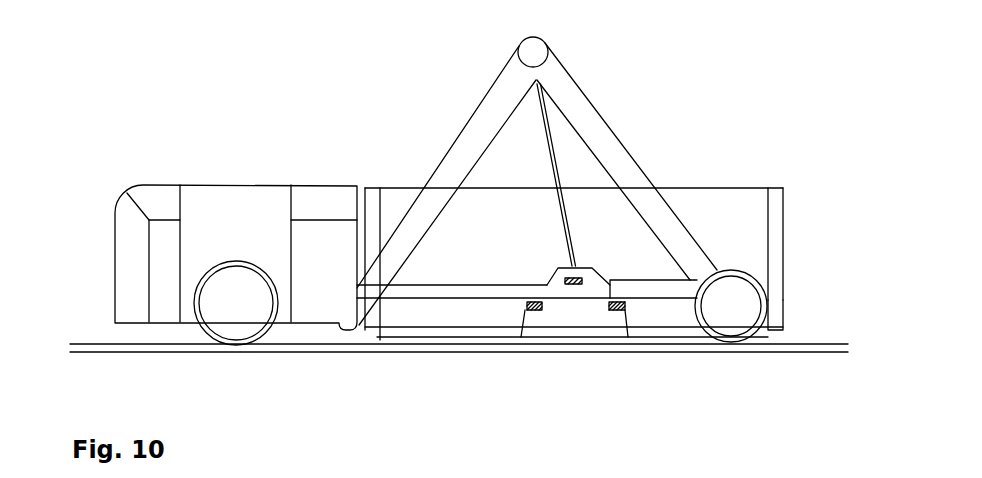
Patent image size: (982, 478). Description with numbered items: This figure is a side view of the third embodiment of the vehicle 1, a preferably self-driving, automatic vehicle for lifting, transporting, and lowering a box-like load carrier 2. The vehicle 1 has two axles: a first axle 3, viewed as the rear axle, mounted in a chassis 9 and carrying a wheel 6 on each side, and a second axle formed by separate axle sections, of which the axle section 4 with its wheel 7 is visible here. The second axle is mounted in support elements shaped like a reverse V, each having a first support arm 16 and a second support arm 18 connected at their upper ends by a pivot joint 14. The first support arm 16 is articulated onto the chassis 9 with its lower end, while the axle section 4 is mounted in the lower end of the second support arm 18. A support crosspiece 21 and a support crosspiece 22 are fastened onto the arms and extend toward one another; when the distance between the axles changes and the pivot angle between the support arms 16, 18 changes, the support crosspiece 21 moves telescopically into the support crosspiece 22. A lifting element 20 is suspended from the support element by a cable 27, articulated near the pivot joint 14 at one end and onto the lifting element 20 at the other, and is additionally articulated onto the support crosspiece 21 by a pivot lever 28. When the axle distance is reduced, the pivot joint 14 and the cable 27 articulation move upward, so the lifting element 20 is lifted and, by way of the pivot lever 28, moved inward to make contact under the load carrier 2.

The vehicle 1 is at (207, 143).
The load carrier 2 is at (777, 223).
The first axle 3 is at (235, 303).
The axle section 4 is at (733, 303).
The wheel 6 is at (250, 335).
The wheel 7 is at (783, 302).
The chassis 9 is at (116, 285).
The pivot joint 14 is at (541, 52).
The first support arm 16 is at (458, 134).
The second support arm 18 is at (621, 145).
The lifting element 20 is at (573, 327).
The support crosspiece 21 is at (413, 290).
The support crosspiece 22 is at (677, 290).
The cable 27 is at (562, 202).
The pivot lever 28 is at (533, 303).